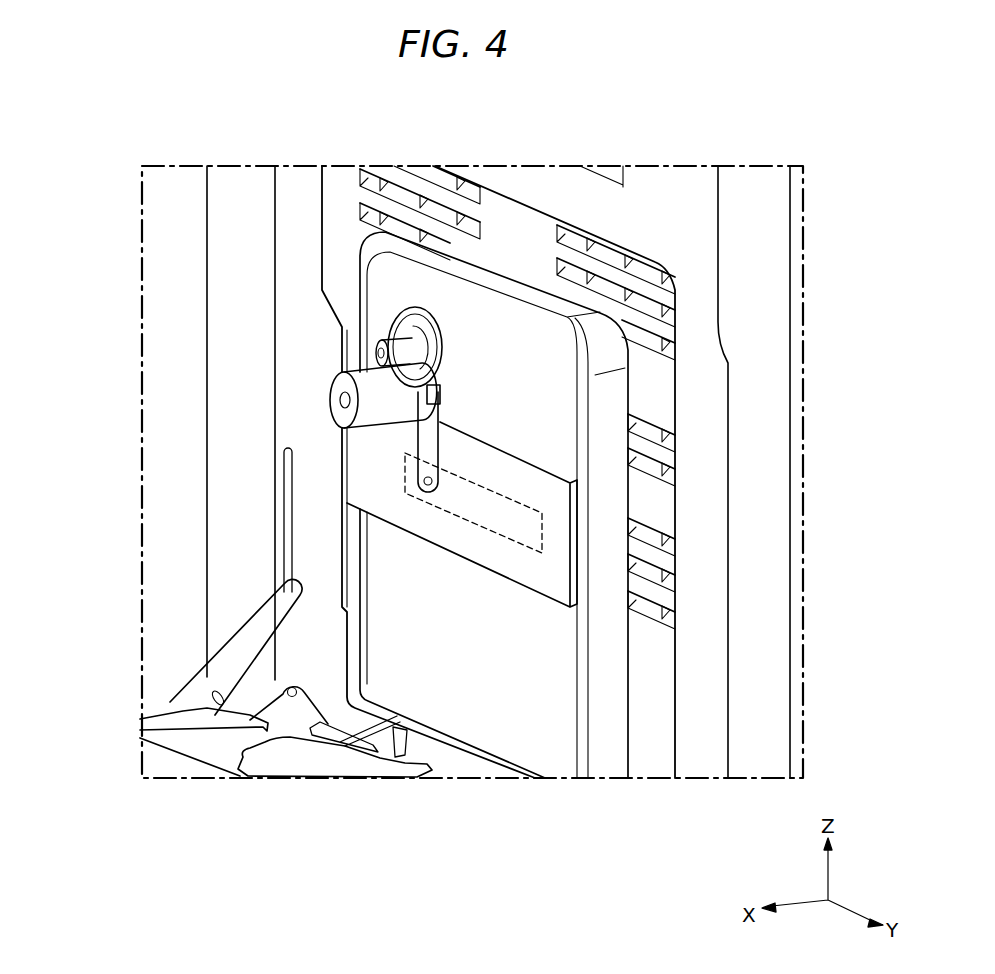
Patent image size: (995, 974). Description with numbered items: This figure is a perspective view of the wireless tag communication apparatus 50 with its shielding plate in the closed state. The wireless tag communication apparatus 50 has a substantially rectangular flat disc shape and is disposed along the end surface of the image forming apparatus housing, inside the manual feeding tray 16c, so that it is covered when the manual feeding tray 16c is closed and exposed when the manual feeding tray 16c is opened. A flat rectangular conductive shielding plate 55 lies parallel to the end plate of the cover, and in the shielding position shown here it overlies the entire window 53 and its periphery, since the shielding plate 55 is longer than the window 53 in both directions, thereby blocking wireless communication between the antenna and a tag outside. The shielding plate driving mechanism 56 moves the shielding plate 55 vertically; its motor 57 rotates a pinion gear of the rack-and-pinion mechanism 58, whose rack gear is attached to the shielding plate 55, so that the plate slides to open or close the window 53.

The wireless tag communication apparatus 50 is at (503, 275).
The window 53 is at (483, 528).
The shielding plate 55 is at (510, 477).
The shielding plate driving mechanism 56 is at (223, 410).
The motor 57 is at (340, 402).
The rack-and-pinion mechanism 58 is at (388, 322).
The manual feeding tray 16c is at (185, 715).